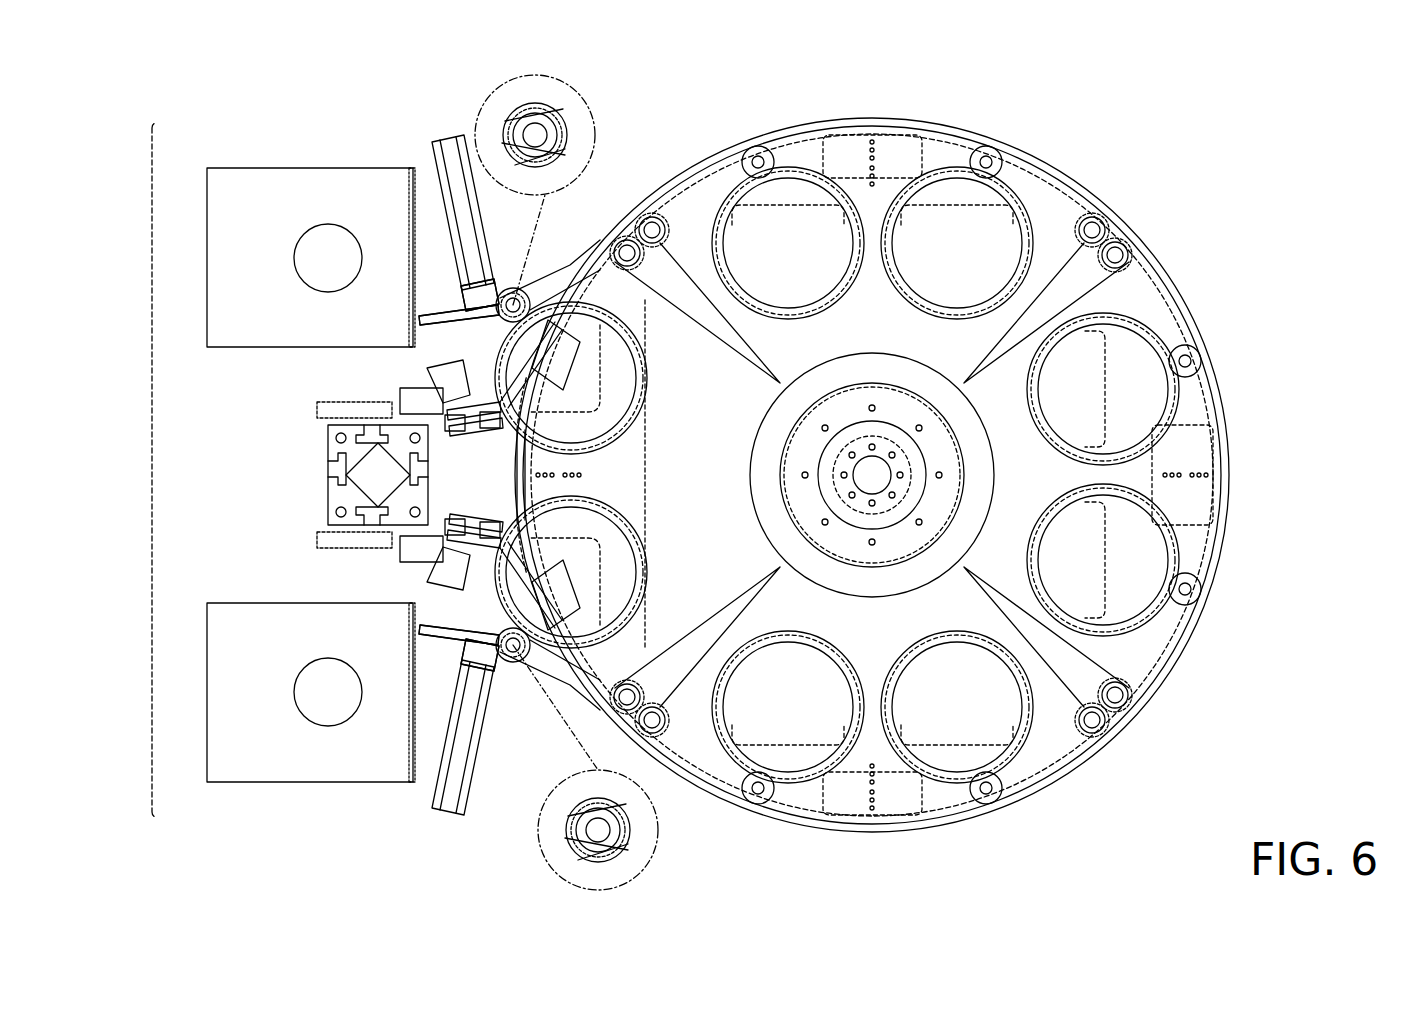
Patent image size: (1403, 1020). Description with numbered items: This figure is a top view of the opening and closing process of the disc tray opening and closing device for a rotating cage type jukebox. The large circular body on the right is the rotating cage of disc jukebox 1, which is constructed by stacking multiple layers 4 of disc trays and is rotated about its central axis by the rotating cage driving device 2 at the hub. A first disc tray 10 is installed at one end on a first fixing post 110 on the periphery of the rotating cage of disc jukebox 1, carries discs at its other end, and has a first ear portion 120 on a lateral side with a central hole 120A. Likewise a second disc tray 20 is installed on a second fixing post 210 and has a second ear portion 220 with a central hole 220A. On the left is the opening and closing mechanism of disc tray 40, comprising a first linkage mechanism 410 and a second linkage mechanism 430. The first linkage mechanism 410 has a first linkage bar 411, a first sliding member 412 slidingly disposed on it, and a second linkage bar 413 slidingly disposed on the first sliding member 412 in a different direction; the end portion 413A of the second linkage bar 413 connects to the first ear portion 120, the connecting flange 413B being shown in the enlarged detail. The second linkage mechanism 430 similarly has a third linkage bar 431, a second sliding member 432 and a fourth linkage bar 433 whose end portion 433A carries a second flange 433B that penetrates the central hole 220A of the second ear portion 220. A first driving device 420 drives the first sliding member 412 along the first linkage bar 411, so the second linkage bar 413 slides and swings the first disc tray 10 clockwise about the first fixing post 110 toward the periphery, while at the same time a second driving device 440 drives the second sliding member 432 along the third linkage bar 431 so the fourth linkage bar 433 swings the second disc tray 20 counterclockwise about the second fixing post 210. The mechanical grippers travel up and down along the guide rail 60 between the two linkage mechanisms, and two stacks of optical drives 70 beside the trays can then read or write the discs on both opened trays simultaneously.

The rotating cage of disc jukebox 1 is at (1232, 567).
The rotating cage driving device 2 is at (967, 397).
The layers of disc trays 4 is at (1190, 322).
The first disc tray 10 is at (940, 315).
The second disc tray 20 is at (835, 312).
The opening and closing mechanism of disc tray 40 is at (152, 475).
The guide rail 60 is at (328, 475).
The optical drives 70 is at (362, 168).
The first fixing post 110 is at (640, 262).
The first ear portion 120 is at (548, 285).
The central hole 120A is at (492, 125).
The second fixing post 210 is at (640, 692).
The second ear portion 220 is at (516, 660).
The central hole 220A is at (560, 830).
The first linkage mechanism 410 is at (350, 272).
The first linkage bar 411 is at (480, 215).
The first sliding member 412 is at (475, 290).
The second linkage bar 413 is at (458, 300).
The end portion 413A is at (548, 110).
The first arm bushing 413B is at (560, 138).
The first driving device 420 is at (400, 395).
The second linkage mechanism 430 is at (351, 675).
The third linkage bar 431 is at (470, 770).
The second sliding member 432 is at (480, 665).
The fourth linkage bar 433 is at (458, 651).
The end portion 433A is at (612, 855).
The second flange 433B is at (620, 830).
The second driving device 440 is at (400, 555).